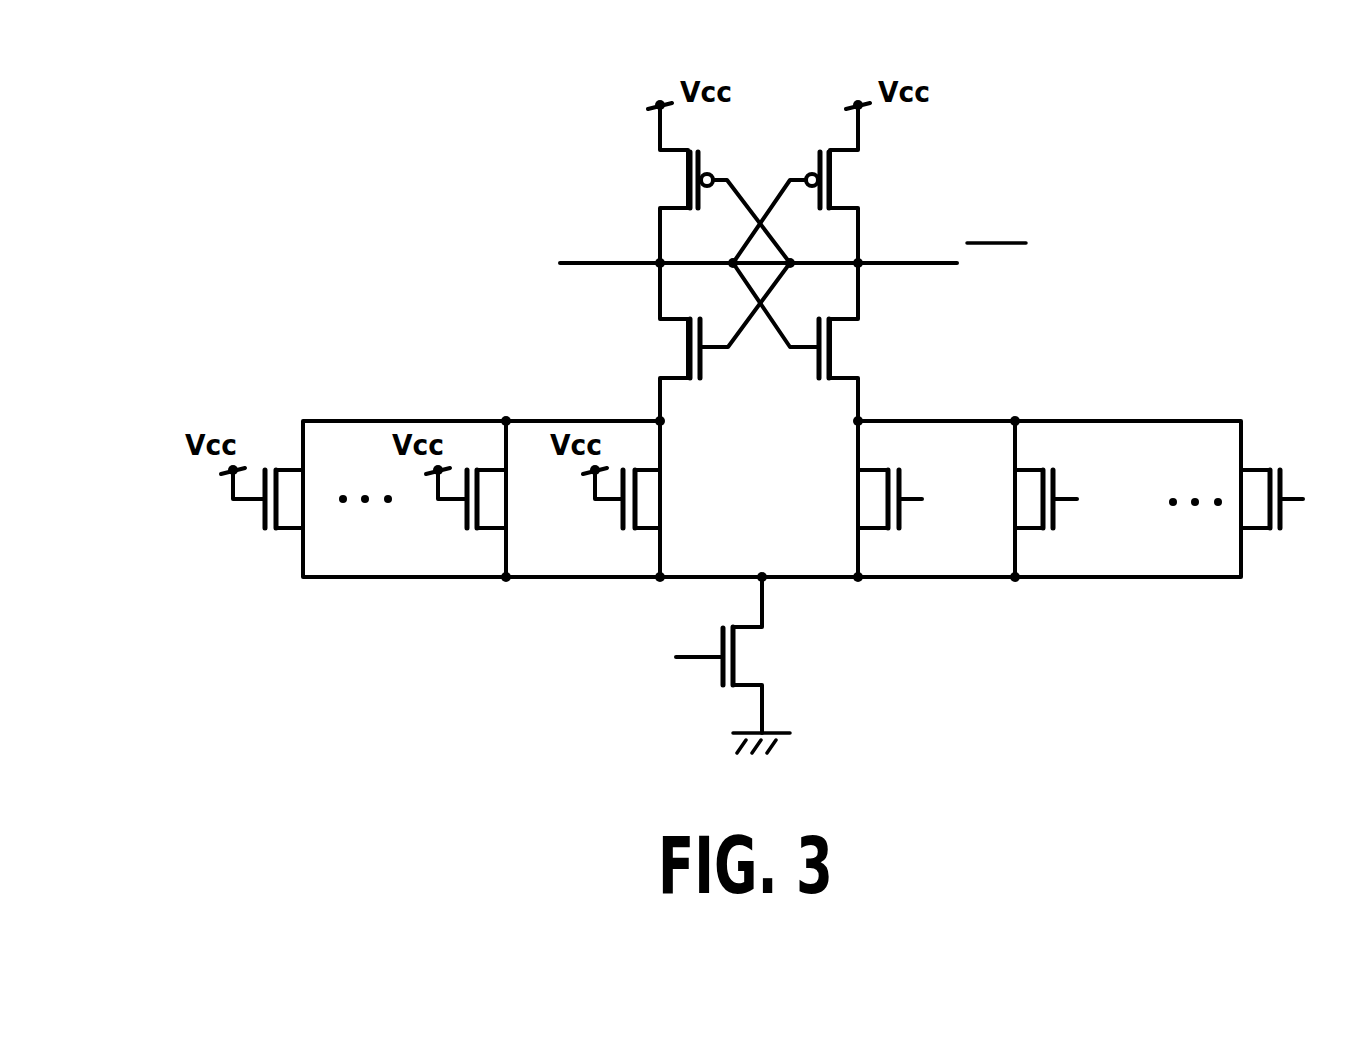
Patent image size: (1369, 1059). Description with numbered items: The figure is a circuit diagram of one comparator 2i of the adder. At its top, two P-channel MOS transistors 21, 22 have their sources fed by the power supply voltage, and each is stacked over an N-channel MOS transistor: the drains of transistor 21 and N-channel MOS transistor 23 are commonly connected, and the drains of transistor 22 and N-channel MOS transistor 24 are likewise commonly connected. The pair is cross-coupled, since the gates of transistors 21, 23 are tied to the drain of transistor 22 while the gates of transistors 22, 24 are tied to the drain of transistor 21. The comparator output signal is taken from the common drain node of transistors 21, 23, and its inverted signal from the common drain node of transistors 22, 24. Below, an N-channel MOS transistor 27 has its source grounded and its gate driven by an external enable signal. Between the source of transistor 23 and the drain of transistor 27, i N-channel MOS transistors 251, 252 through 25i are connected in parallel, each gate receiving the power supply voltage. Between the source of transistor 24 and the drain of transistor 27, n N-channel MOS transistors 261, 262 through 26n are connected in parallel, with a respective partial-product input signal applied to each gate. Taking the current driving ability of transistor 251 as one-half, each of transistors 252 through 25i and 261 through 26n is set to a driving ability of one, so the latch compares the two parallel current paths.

The comparator 2i is at (551, 157).
The P-channel MOS transistor 21 is at (673, 180).
The P-channel MOS transistor 22 is at (843, 184).
The N-channel MOS transistor 23 is at (673, 347).
The N-channel MOS transistor 24 is at (843, 351).
The N-channel MOS transistor 25i is at (288, 532).
The N-channel MOS transistor 252 is at (506, 497).
The N-channel MOS transistor 251 is at (661, 497).
The N-channel MOS transistor 261 is at (858, 497).
The N-channel MOS transistor 262 is at (1033, 530).
The N-channel MOS transistor 26n is at (1258, 532).
The N-channel MOS transistor 27 is at (745, 662).